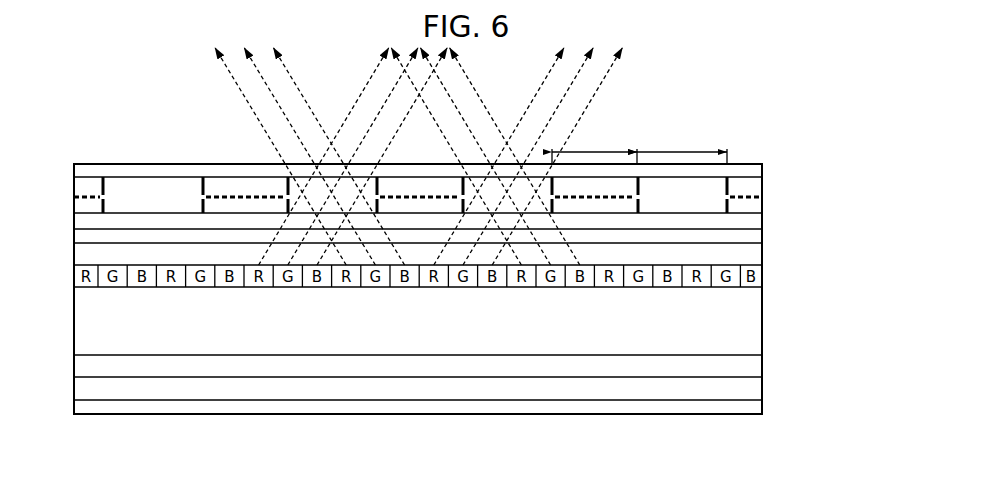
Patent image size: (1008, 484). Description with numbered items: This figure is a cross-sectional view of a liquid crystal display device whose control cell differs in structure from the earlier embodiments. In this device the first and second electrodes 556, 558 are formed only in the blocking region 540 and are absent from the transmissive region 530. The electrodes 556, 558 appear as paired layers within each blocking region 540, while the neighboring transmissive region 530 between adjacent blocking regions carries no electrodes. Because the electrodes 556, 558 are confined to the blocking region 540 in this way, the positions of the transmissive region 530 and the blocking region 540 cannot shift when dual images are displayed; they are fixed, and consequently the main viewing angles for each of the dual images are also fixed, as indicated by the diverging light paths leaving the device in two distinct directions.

The transmissive region 530 is at (682, 148).
The blocking region 540 is at (594, 148).
The first electrode 556 is at (757, 212).
The second electrode 558 is at (757, 189).